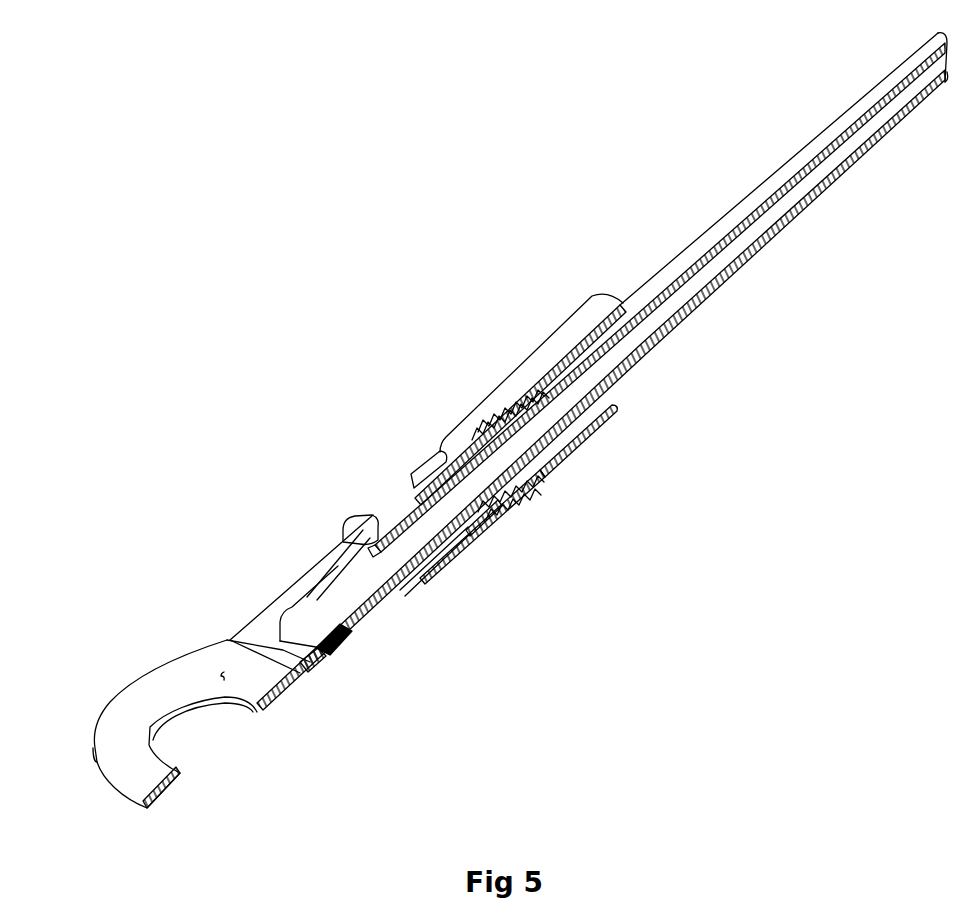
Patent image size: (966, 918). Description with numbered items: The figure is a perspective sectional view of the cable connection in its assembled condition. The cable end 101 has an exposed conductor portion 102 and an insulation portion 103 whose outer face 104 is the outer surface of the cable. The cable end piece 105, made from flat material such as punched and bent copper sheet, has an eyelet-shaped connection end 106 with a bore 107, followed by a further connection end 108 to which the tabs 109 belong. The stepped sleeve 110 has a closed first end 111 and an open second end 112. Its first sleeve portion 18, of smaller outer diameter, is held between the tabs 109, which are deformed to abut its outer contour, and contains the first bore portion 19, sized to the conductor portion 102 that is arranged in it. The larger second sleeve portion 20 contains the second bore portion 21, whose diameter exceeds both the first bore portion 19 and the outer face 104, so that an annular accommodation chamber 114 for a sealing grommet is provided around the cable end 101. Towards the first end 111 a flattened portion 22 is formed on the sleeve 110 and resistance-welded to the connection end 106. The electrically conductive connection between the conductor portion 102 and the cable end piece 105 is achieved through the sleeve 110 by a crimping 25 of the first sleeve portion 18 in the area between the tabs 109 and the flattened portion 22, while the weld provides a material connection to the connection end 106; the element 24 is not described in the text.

The cable end 101 is at (718, 203).
The outer face 104 is at (682, 260).
The insulation portion 103 is at (707, 297).
The conductor portion 102 is at (455, 518).
The second sleeve portion 20 is at (522, 377).
The sleeve 110 is at (436, 398).
The tabs 109 is at (416, 472).
The second end 112 is at (612, 406).
The annular accommodation chamber 114 is at (560, 437).
The second bore portion 21 is at (568, 434).
The first bore portion 19 is at (452, 518).
The first sleeve portion 18 is at (431, 562).
The crimping 25 is at (358, 518).
The wedge 24 is at (344, 645).
The flattened portion 22 is at (310, 612).
The connection end 108 is at (342, 641).
The first end 111 is at (314, 661).
The cable end piece 105 is at (145, 656).
The connection end 106 is at (121, 742).
The bore 107 is at (211, 709).